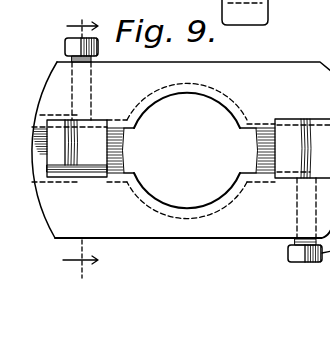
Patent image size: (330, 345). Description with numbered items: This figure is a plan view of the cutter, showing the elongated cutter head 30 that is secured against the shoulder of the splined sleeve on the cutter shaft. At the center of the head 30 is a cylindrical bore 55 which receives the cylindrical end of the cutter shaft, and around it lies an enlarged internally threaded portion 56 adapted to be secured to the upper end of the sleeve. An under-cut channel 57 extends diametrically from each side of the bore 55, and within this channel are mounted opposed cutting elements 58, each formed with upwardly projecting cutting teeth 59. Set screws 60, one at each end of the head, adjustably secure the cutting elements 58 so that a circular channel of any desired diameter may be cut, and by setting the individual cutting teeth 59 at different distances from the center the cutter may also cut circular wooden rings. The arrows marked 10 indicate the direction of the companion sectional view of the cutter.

The section line arrows 10 is at (80, 151).
The clamp body 30 is at (288, 77).
The central bore 55 is at (194, 208).
The hidden outer bore 56 is at (177, 218).
The threaded wall 57 is at (35, 160).
The cross hole 58 is at (181, 148).
The bore wall 59 is at (58, 152).
The set screw 60 is at (65, 47).